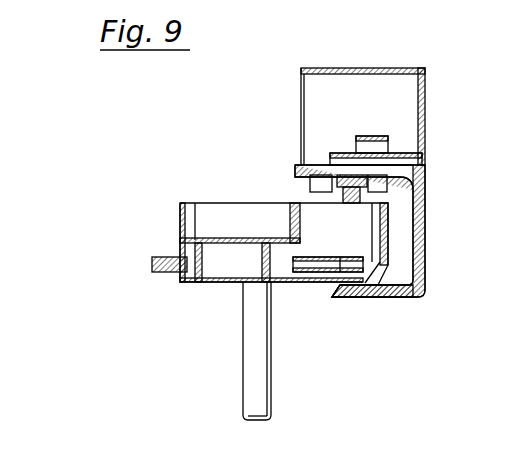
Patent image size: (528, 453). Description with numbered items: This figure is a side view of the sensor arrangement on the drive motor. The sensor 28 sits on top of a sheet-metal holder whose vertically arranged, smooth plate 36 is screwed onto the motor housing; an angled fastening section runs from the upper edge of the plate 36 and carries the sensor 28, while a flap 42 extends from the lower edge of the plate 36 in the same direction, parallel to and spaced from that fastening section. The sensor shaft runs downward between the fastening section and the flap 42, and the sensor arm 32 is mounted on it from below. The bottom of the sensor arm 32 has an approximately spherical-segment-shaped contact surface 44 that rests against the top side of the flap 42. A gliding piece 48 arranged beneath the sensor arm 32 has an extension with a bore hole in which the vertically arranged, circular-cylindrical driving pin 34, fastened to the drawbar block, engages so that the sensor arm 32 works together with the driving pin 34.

The sensor 28 is at (378, 97).
The sensor arm 32 is at (222, 222).
The driving pin 34 is at (243, 388).
The vertical plate 36 is at (423, 230).
The flap 42 is at (383, 297).
The contact surface 44 is at (350, 285).
The gliding piece 48 is at (162, 267).